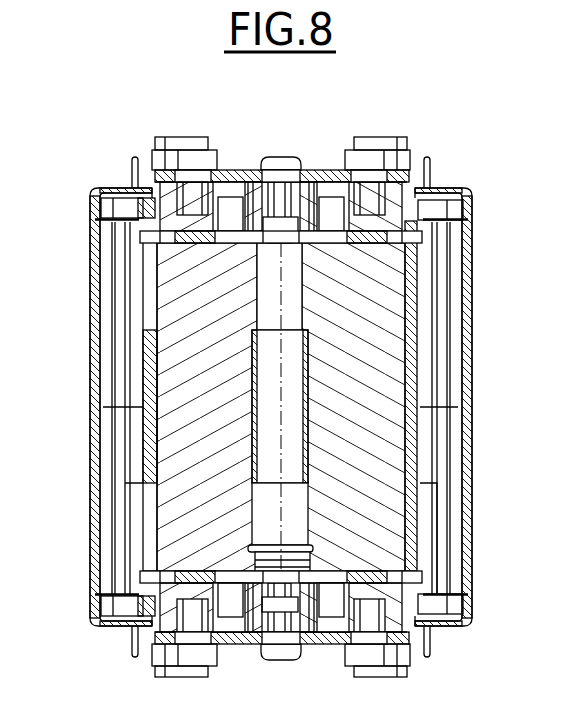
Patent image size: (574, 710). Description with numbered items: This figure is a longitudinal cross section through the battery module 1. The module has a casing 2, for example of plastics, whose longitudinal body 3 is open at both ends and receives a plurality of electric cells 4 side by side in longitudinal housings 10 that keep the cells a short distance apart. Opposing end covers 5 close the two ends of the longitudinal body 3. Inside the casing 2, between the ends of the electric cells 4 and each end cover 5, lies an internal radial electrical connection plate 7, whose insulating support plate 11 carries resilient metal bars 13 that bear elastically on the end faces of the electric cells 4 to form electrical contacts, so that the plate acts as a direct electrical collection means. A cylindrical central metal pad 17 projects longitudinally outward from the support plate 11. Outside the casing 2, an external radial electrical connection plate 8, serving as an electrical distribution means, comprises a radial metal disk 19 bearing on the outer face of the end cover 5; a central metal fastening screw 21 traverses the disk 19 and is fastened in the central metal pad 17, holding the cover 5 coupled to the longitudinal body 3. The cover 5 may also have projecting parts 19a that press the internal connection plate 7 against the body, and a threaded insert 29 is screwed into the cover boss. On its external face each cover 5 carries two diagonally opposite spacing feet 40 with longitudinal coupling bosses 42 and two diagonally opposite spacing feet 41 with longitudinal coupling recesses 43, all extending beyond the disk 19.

The battery module 1 is at (80, 152).
The casing 2 is at (488, 336).
The longitudinal body 3 is at (478, 471).
The electric cells 4 is at (383, 406).
The end covers 5 is at (474, 190).
The internal radial electrical connection plate 7 is at (395, 277).
The external radial electrical connection plate 8 is at (333, 165).
The longitudinal housings 10 is at (163, 405).
The support plate 11 is at (200, 292).
The resilient metal bars 13 is at (200, 268).
The central metal pad 17 is at (262, 200).
The radial metal disk 19 is at (236, 200).
The projecting parts 19a is at (325, 200).
The central metal fastening screw 21 is at (281, 157).
The threaded insert 29 is at (105, 193).
The spacing feet 40 is at (152, 157).
The spacing feet 41 is at (393, 160).
The longitudinal coupling bosses 42 is at (194, 145).
The longitudinal coupling recesses 43 is at (362, 155).